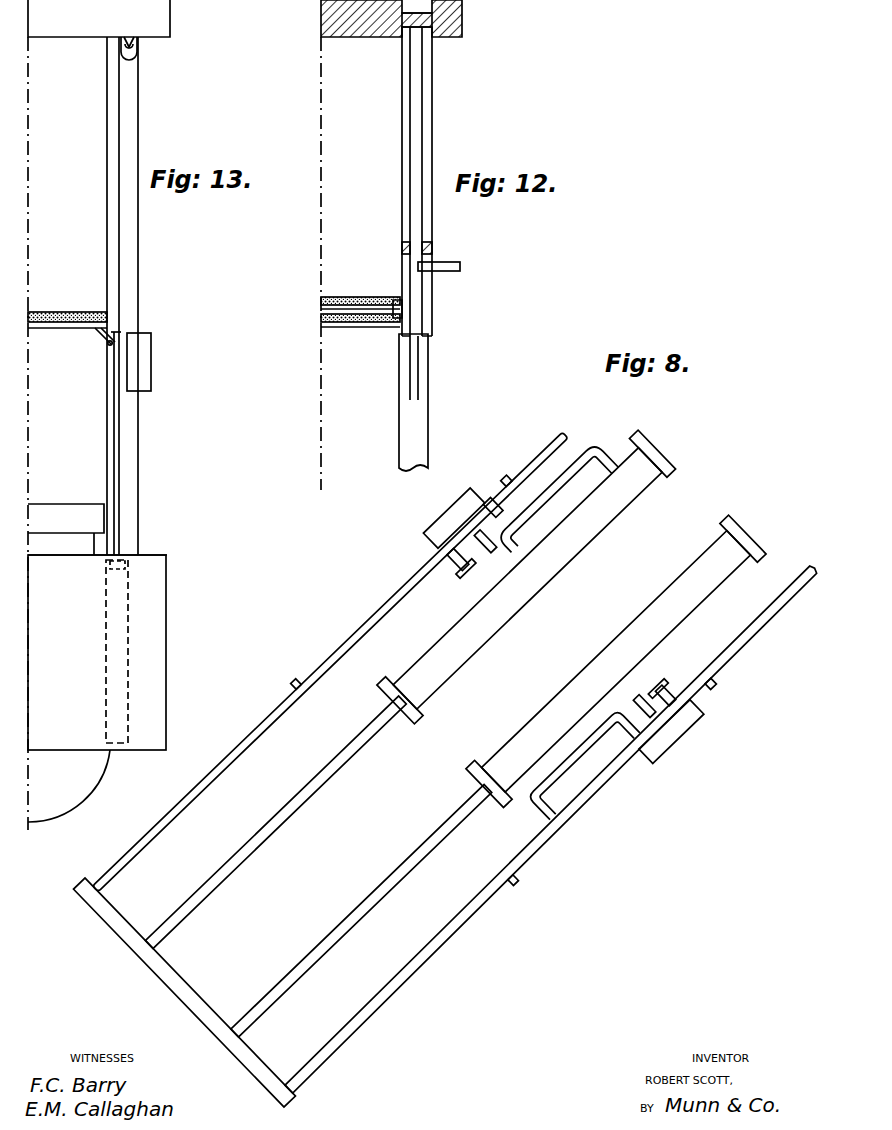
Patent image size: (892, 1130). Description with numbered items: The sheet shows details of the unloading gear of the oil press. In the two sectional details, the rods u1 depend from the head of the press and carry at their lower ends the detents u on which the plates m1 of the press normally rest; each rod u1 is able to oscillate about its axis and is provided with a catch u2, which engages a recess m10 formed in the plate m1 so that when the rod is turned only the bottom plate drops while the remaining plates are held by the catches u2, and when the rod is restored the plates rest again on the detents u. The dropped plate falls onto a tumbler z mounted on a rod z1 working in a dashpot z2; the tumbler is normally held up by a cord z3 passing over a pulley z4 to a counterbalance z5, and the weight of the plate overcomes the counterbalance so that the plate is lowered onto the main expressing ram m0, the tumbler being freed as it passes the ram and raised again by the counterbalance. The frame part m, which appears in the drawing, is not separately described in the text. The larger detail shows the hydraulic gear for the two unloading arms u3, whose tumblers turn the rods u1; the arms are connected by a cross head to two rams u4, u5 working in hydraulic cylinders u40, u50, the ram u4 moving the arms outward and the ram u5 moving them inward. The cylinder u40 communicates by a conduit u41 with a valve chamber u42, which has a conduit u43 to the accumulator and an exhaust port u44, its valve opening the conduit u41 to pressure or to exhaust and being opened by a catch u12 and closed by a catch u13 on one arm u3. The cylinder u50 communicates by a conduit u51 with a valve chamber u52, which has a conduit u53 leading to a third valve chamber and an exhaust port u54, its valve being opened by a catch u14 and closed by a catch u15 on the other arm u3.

In FIG. 13, the tumbler z is at (103, 346).
In FIG. 13, the rod z1 is at (120, 432).
In FIG. 13, the dashpot z2 is at (106, 668).
In FIG. 13, the cord z3 is at (121, 258).
In FIG. 13, the pulley z4 is at (139, 55).
In FIG. 13, the counterbalance z5 is at (152, 358).
In FIG. 13, the frame member m is at (160, 618).
In FIG. 12, the frame member m is at (462, 30).
In FIG. 13, the main expressing ram m0 is at (48, 545).
In FIG. 13, the plates of the oil press m1 is at (58, 326).
In FIG. 12, the plates of the oil press m1 is at (345, 330).
In FIG. 12, the recess m10 is at (400, 298).
In FIG. 12, the detent u is at (397, 333).
In FIG. 12, the rod u1 is at (405, 165).
In FIG. 12, the catch u2 is at (413, 310).
In FIG. 8, the unloading arm u3 is at (748, 652).
In FIG. 8, the ram u4 is at (304, 793).
In FIG. 8, the ram u5 is at (365, 910).
In FIG. 8, the catch u12 is at (294, 680).
In FIG. 8, the catch u13 is at (500, 473).
In FIG. 8, the catch u14 is at (718, 686).
In FIG. 8, the catch u15 is at (500, 895).
In FIG. 8, the hydraulic cylinder u40 is at (430, 680).
In FIG. 8, the conduit u41 is at (581, 452).
In FIG. 8, the valve chamber u42 is at (435, 545).
In FIG. 8, the conduit u43 is at (466, 566).
In FIG. 8, the exhaust port u44 is at (487, 550).
In FIG. 8, the hydraulic cylinder u50 is at (702, 578).
In FIG. 8, the conduit u51 is at (522, 792).
In FIG. 8, the valve chamber u52 is at (657, 737).
In FIG. 8, the conduit u53 is at (657, 685).
In FIG. 8, the exhaust port u54 is at (637, 697).